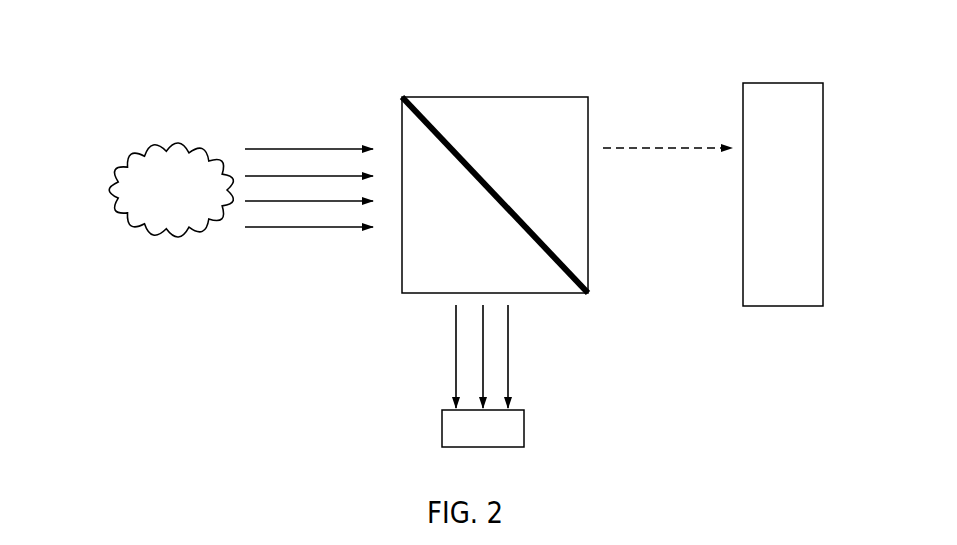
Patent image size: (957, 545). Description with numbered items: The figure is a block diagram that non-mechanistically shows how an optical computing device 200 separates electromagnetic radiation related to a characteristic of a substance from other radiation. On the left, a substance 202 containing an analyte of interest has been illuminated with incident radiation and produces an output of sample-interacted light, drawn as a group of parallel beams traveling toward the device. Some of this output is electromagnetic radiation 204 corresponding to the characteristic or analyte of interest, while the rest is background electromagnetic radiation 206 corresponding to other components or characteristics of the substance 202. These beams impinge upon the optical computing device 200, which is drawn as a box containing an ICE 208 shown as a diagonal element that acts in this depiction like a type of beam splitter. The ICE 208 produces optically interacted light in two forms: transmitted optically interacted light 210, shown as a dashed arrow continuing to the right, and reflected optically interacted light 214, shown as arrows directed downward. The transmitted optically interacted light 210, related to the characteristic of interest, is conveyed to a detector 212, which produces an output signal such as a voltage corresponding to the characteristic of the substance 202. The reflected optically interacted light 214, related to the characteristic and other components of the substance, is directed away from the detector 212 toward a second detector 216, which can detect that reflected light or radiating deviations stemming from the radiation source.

The optical computing device 200 is at (461, 84).
The substance 202 is at (122, 210).
The electromagnetic radiation 204 is at (317, 158).
The background electromagnetic radiation 206 is at (303, 220).
The ICE 208 is at (477, 168).
The transmitted optically interacted light 210 is at (643, 148).
The detector 212 is at (800, 207).
The reflected optically interacted light 214 is at (509, 343).
The second detector 216 is at (500, 436).